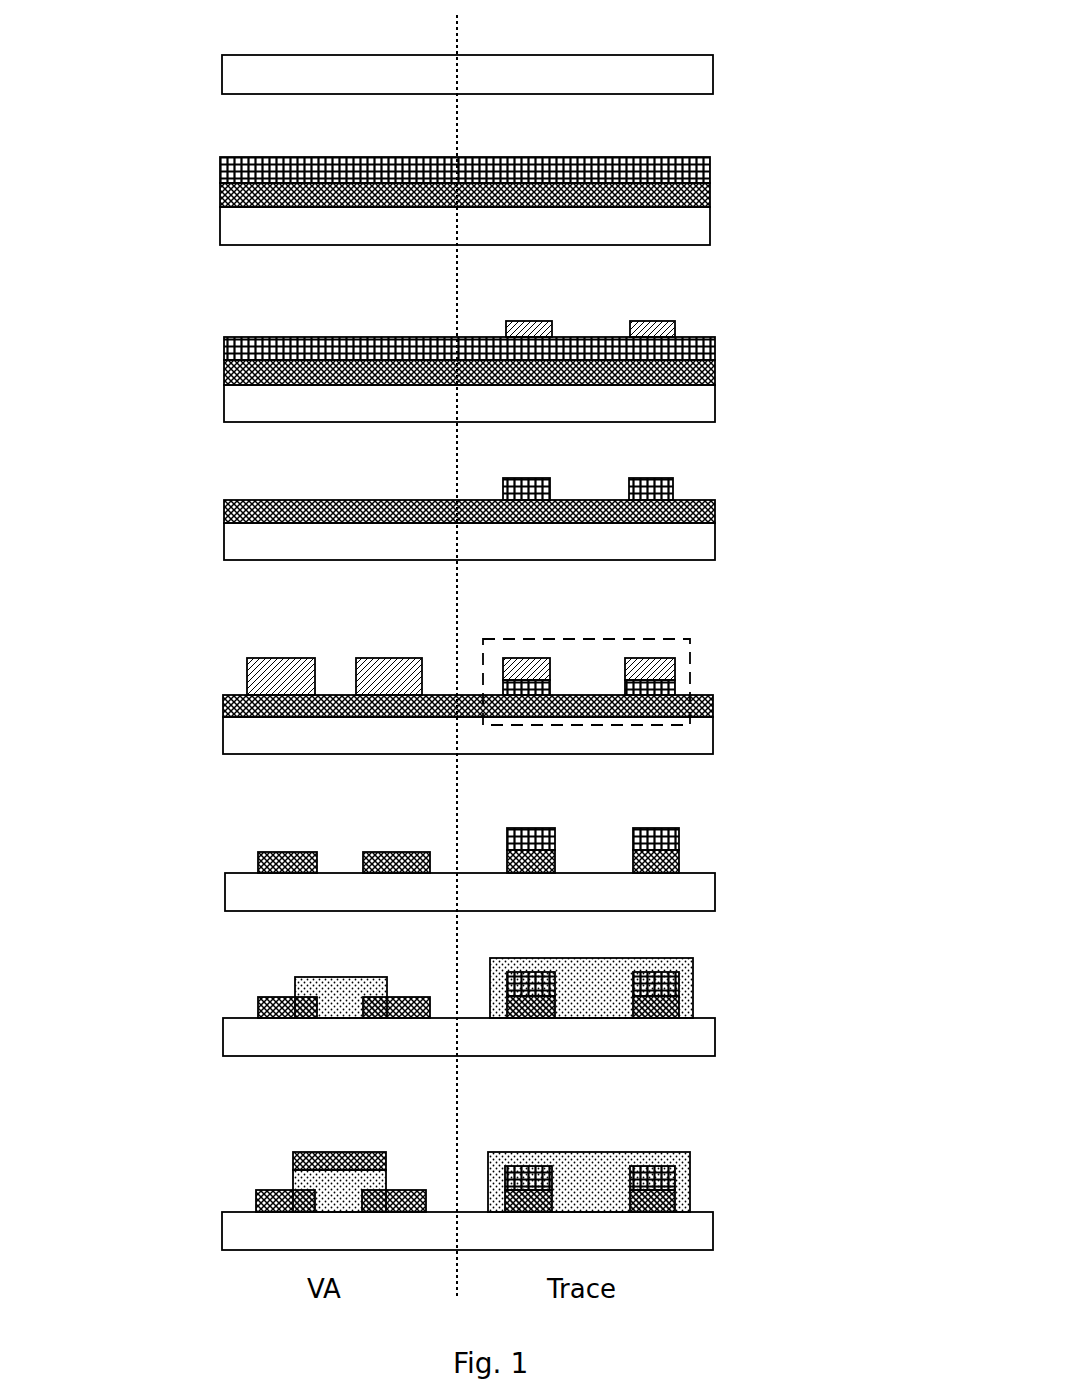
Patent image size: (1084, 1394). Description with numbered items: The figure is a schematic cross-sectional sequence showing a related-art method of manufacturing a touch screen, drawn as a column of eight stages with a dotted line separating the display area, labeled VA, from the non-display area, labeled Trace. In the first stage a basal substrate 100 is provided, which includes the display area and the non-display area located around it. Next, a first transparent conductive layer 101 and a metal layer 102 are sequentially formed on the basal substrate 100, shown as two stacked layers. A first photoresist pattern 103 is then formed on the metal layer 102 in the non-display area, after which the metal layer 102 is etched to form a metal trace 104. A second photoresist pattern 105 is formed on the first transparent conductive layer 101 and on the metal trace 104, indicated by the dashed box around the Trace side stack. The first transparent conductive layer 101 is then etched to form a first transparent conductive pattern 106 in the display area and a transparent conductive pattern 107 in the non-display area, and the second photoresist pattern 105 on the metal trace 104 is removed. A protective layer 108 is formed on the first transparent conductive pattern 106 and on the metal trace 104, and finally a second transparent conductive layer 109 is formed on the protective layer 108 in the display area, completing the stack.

The basal substrate 100 is at (713, 55).
The first transparent conductive layer 101 is at (710, 197).
The metal layer 102 is at (710, 157).
The first photoresist pattern 103 is at (675, 321).
The metal trace 104 is at (673, 478).
The second photoresist pattern 105 is at (675, 657).
The first transparent conductive pattern 106 is at (258, 852).
The transparent conductive pattern 107 is at (679, 871).
The protective layer 108 is at (693, 958).
The second transparent conductive layer 109 is at (293, 1152).